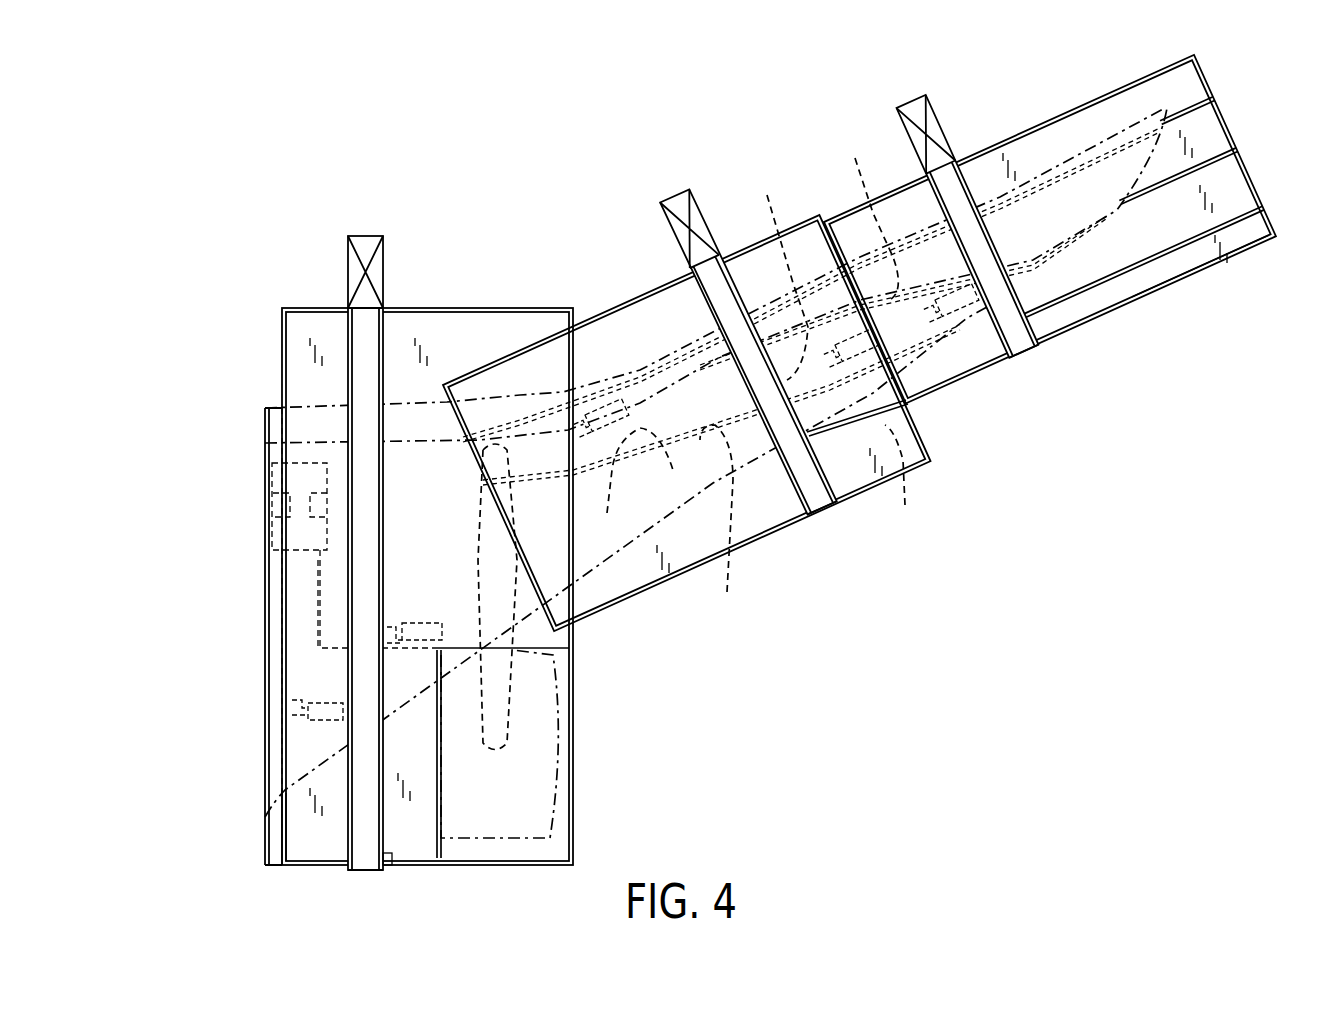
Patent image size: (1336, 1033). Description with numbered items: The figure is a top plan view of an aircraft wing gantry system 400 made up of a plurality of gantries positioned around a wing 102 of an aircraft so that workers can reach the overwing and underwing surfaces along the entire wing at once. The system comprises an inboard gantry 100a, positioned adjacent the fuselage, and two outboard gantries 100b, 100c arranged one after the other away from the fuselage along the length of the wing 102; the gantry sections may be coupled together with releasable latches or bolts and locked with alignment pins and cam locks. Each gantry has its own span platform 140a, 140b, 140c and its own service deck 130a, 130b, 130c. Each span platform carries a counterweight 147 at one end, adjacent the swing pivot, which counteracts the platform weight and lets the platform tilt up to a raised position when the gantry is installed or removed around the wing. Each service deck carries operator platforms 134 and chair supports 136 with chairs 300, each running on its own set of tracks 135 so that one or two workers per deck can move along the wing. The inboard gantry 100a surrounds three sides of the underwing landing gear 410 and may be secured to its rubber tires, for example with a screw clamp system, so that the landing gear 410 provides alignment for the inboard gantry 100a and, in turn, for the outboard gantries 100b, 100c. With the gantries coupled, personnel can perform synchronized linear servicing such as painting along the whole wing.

The aircraft wing gantry system 400 is at (540, 140).
The inboard gantry 100a is at (446, 308).
The outboard gantry 100b is at (736, 245).
The outboard gantry 100c is at (1062, 113).
The wing 102 is at (596, 590).
The service deck 130a is at (318, 845).
The service deck 130b is at (653, 572).
The service deck 130c is at (1167, 263).
The operator platform 134 is at (1015, 393).
The tracks 135 is at (1257, 62).
The chair support 136 is at (478, 478).
The platform 140a is at (367, 866).
The platform 140b is at (812, 502).
The platform 140c is at (1005, 275).
The counterweight 147 is at (380, 270).
The chair 300 is at (320, 708).
The underwing landing gear 410 is at (270, 505).